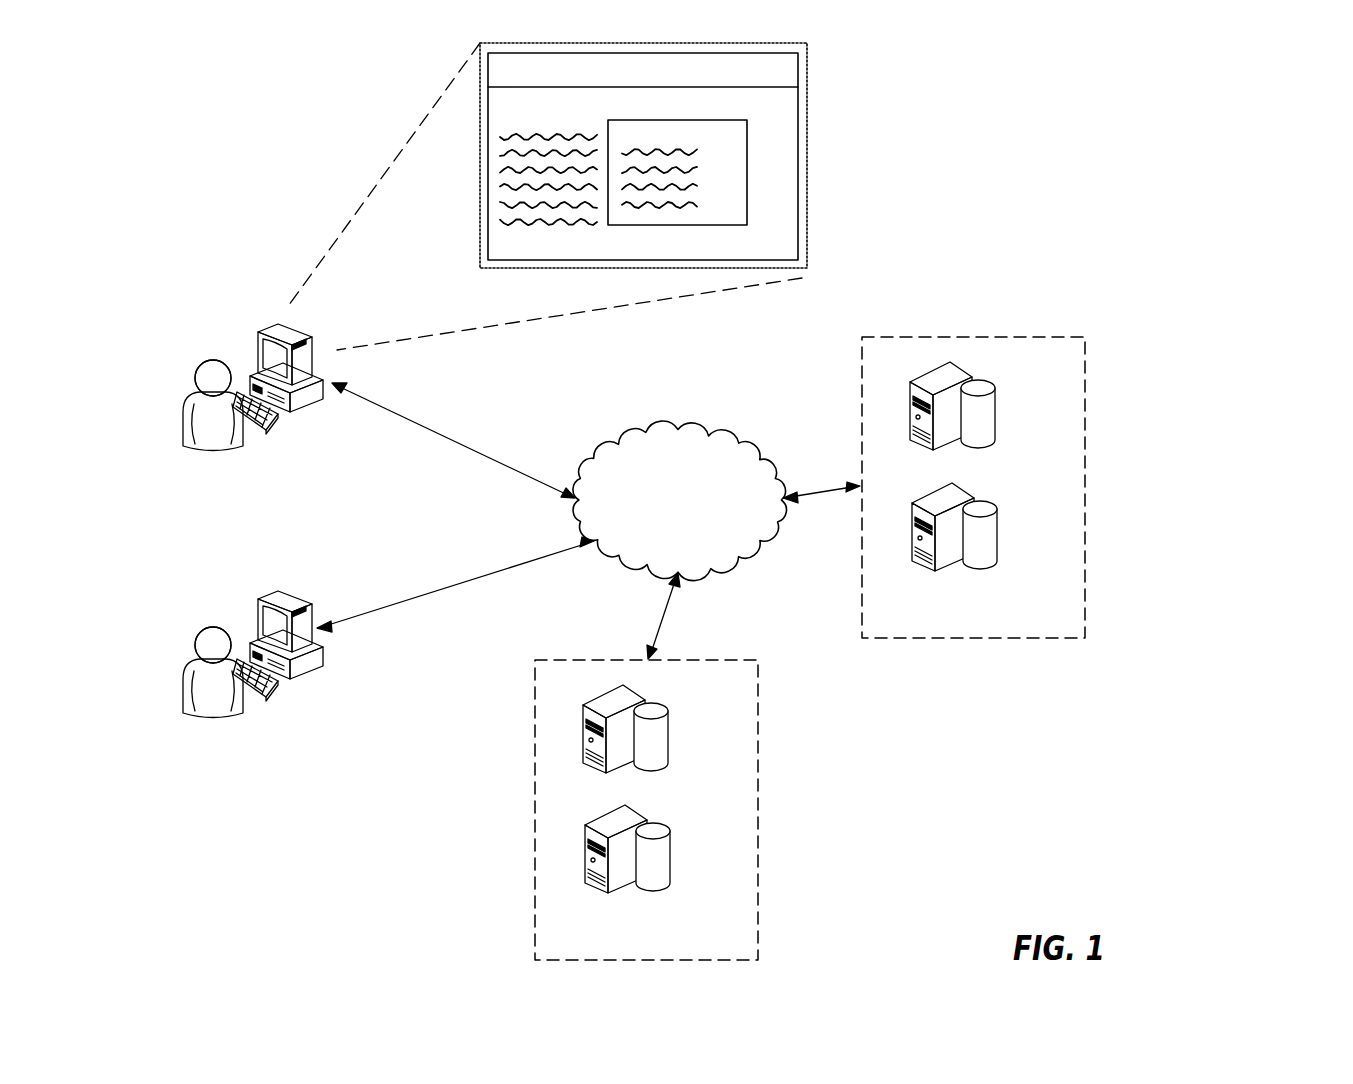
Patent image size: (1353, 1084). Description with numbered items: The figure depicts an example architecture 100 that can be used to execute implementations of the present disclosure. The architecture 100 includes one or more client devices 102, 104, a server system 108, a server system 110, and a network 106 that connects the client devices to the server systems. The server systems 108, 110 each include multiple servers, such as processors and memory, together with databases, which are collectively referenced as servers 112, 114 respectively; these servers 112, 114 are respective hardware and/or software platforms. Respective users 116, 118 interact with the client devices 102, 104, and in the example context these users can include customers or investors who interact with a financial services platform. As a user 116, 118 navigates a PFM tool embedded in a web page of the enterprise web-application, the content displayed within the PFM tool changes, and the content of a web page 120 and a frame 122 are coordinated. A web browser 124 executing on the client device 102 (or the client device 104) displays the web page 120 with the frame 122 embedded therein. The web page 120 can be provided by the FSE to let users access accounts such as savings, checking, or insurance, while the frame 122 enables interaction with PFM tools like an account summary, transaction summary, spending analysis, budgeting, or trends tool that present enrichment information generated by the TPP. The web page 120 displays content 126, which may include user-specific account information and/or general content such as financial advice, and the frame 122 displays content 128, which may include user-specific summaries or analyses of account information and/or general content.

The architecture 100 is at (1128, 177).
The client device 102 is at (258, 331).
The client device 104 is at (258, 597).
The network 106 is at (677, 430).
The server system 108 is at (1085, 488).
The server system 110 is at (758, 810).
The servers 112 is at (995, 425).
The servers 114 is at (668, 747).
The user 116 is at (215, 448).
The user 118 is at (215, 715).
The web page 120 is at (529, 114).
The frame 122 is at (738, 151).
The web browser 124 is at (808, 138).
The content 126 is at (508, 232).
The content 128 is at (707, 193).